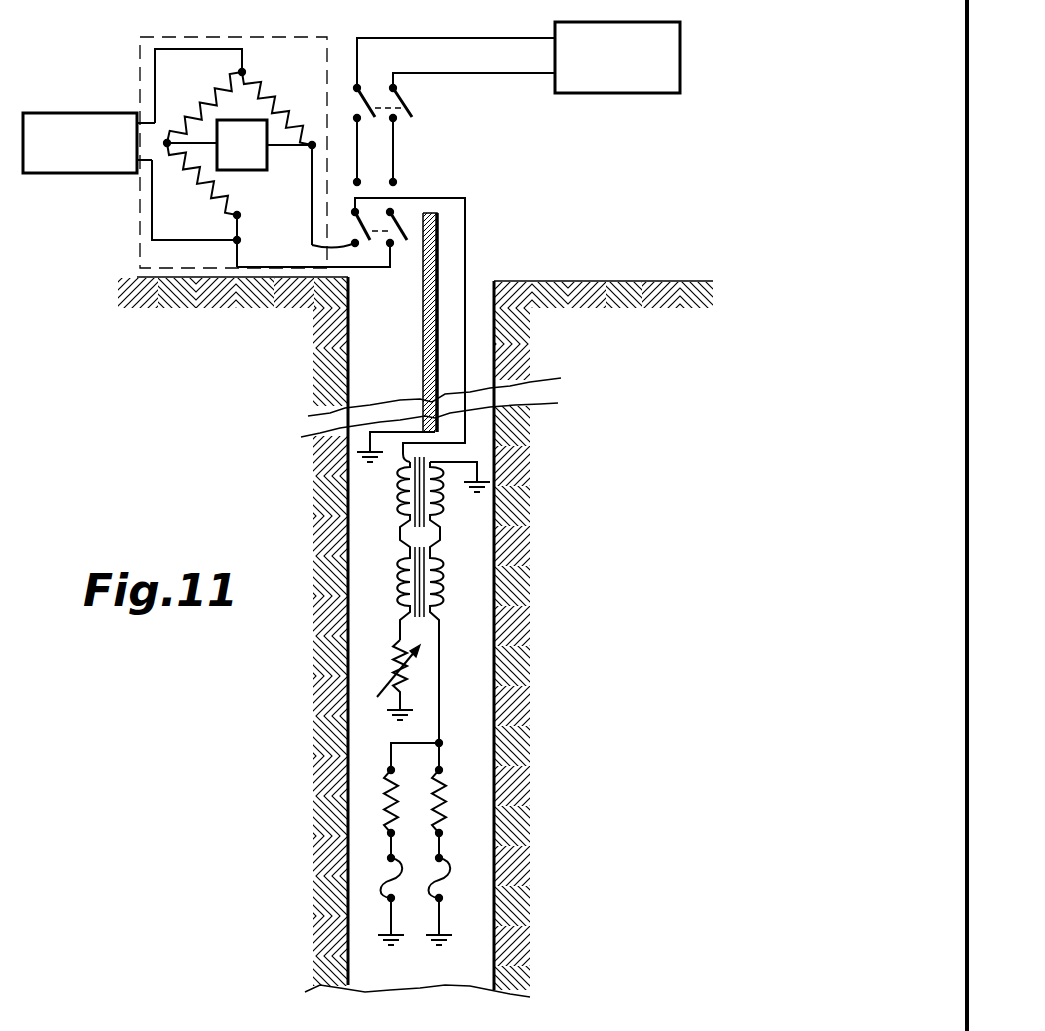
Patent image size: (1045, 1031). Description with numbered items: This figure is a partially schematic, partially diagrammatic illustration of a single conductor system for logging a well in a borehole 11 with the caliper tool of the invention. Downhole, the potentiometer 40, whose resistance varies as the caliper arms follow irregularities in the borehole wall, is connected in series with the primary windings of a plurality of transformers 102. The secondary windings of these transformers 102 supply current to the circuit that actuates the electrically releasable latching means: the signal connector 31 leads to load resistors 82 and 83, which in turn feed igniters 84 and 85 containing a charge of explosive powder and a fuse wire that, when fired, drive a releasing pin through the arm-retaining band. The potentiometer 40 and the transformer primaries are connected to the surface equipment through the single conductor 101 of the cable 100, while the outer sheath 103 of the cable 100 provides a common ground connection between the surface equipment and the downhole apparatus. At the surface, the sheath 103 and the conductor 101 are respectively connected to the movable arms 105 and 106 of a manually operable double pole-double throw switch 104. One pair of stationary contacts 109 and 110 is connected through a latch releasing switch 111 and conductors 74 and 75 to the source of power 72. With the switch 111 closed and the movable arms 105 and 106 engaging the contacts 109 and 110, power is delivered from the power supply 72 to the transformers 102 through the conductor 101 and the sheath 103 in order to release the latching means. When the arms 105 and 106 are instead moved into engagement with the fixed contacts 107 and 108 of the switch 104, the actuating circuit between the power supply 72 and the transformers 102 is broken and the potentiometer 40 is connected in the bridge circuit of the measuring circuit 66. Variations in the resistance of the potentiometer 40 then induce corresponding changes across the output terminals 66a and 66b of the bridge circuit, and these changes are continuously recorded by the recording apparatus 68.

The borehole 11 is at (345, 368).
The signal connector 31 is at (444, 671).
The potentiometer 40 is at (395, 648).
The measuring circuit 66 is at (269, 35).
The output terminal 66a is at (244, 70).
The output terminal 66b is at (240, 214).
The recording apparatus 68 is at (112, 112).
The source of power 72 is at (680, 31).
The conductor 74 is at (530, 41).
The conductor 75 is at (530, 76).
The load resistor 82 is at (386, 778).
The load resistor 83 is at (444, 800).
The igniter 84 is at (382, 876).
The igniter 85 is at (440, 878).
The cable 100 is at (428, 326).
The single conductor 101 is at (527, 263).
The transformers 102 is at (448, 500).
The outer sheath 103 is at (436, 353).
The double pole-double throw switch 104 is at (405, 209).
The movable arm 105 is at (398, 216).
The movable arm 106 is at (355, 229).
The fixed contact 107 is at (388, 247).
The fixed contact 108 is at (322, 251).
The stationary contact 109 is at (396, 182).
The stationary contact 110 is at (360, 182).
The latch releasing switch 111 is at (413, 104).